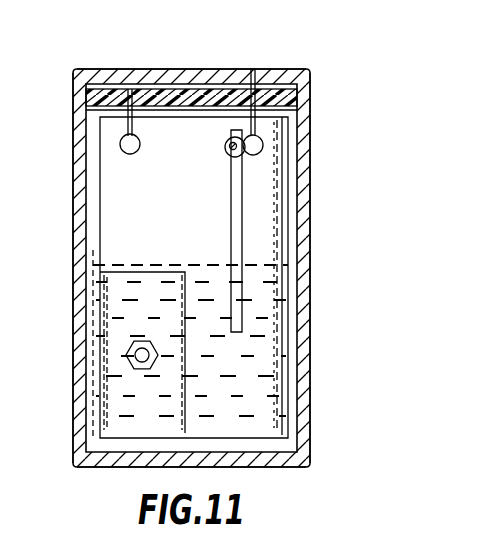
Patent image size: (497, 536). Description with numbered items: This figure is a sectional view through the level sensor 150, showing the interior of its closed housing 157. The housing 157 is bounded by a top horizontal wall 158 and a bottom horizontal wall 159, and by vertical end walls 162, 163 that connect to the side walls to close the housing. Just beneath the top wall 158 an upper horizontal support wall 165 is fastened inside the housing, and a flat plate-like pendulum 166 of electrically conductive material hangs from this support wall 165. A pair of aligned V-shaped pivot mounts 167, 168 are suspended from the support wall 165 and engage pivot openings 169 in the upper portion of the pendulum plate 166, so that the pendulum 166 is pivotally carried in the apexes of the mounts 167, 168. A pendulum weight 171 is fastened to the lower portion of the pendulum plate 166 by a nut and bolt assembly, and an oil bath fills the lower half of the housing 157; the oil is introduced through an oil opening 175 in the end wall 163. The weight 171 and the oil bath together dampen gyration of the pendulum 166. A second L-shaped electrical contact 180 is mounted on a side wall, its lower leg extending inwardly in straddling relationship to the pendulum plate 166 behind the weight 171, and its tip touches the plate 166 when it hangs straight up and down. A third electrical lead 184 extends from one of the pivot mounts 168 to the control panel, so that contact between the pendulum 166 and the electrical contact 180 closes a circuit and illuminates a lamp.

The level sensor 150 is at (301, 40).
The closed housing 157 is at (314, 278).
The top horizontal wall 158 is at (135, 69).
The bottom horizontal wall 159 is at (275, 462).
The vertical end wall 162 is at (300, 228).
The vertical end wall 163 is at (76, 254).
The upper horizontal support wall 165 is at (290, 96).
The pendulum plate 166 is at (263, 202).
The V-shaped pivot mount 167 is at (128, 122).
The V-shaped pivot mount 168 is at (263, 150).
The pivot opening 169 is at (124, 148).
The pendulum weight 171 is at (115, 402).
The oil opening 175 is at (86, 232).
The second L-shaped electrical contact 180 is at (230, 208).
The third electrical lead 184 is at (253, 69).